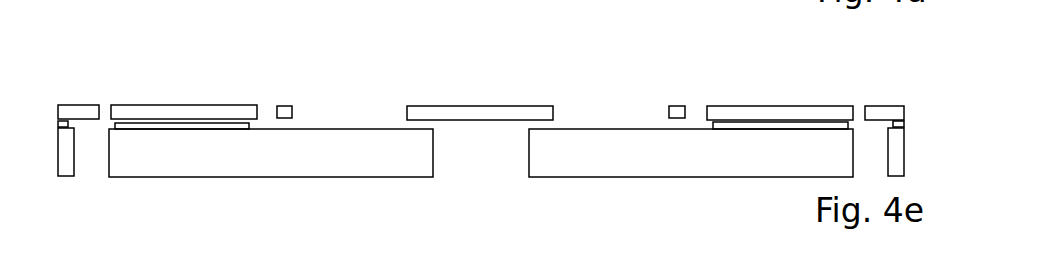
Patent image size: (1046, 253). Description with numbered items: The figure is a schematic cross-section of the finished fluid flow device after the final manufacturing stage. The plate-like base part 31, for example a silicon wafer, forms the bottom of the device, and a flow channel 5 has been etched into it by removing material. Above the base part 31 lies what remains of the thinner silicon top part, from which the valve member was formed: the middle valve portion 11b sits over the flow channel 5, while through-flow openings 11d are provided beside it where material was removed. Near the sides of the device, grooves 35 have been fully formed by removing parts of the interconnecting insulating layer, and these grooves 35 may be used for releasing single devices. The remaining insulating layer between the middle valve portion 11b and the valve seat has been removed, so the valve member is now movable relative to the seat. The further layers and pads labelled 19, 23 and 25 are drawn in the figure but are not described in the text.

The flow channel 5 is at (449, 173).
The middle valve portion 11b is at (504, 115).
The through-flow openings 11d is at (364, 115).
The adhesive layer 19 is at (233, 125).
The contact pad 23 is at (91, 115).
The electrode plate 25 is at (208, 113).
The base part 31 is at (653, 150).
The grooves 35 is at (82, 153).